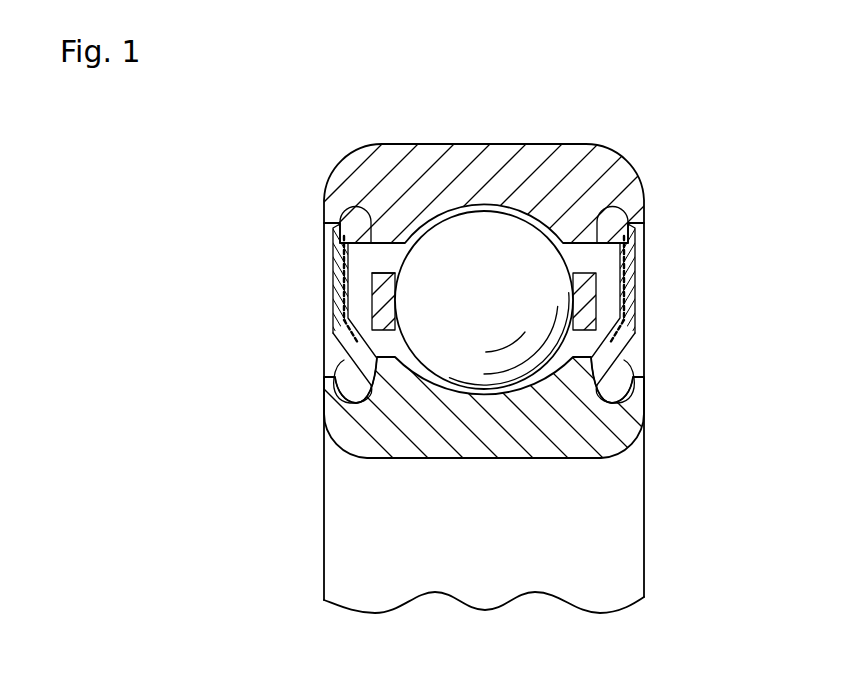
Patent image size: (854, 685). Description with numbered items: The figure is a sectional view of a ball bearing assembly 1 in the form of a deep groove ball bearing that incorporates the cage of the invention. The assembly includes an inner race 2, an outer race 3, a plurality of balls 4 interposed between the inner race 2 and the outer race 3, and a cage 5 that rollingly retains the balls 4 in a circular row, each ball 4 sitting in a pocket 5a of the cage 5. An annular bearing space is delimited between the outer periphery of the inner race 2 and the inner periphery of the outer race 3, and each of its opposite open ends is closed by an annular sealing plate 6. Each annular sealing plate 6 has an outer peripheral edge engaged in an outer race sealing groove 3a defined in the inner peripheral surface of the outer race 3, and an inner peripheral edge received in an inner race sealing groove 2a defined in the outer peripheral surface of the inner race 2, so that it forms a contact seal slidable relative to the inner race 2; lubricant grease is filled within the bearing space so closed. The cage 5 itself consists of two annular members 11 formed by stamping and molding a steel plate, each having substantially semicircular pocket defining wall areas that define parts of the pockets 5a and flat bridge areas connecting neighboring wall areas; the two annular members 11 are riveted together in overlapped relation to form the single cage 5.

The ball bearing assembly 1 is at (459, 332).
The inner race 2 is at (373, 428).
The inner race sealing groove 2a is at (352, 390).
The outer race 3 is at (405, 173).
The outer race sealing groove 3a is at (347, 213).
The ball 4 is at (527, 245).
The cage 5 is at (368, 283).
The pocket 5a is at (396, 285).
The annular sealing plate 6 is at (346, 307).
The annular member 11 is at (344, 333).